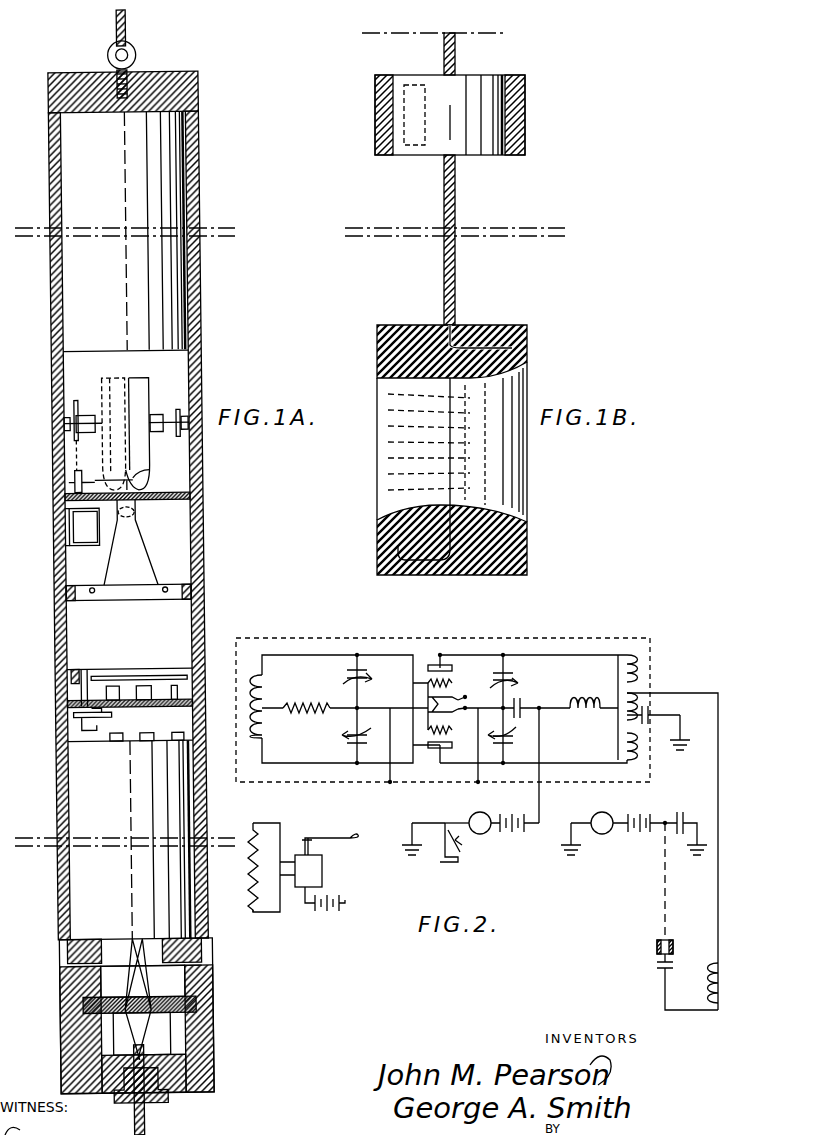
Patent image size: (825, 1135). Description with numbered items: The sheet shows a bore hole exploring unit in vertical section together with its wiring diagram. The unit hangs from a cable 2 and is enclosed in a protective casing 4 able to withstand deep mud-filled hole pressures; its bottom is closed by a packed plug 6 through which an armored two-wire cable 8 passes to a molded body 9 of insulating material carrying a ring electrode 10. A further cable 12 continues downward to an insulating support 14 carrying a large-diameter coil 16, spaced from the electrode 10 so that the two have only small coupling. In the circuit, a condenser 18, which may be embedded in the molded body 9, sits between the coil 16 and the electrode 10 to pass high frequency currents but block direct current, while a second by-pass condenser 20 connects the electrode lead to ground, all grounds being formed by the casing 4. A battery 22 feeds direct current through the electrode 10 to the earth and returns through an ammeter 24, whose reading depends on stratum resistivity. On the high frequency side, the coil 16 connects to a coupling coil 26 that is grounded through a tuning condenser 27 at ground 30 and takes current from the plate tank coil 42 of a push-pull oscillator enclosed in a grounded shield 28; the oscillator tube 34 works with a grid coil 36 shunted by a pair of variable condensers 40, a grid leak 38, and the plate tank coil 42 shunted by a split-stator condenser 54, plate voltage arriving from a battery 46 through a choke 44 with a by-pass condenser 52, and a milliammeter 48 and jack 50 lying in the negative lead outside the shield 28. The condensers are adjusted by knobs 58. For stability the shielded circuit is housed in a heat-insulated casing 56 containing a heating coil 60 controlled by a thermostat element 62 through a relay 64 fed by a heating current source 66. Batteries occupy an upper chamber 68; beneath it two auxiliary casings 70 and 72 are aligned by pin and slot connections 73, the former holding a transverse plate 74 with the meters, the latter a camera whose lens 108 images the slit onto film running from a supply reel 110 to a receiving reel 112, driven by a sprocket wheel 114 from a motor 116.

In FIG. 1A, the cable 2 is at (133, 28).
In FIG. 2, the cable 2 is at (430, 840).
In FIG. 1A, the protective casing 4 is at (204, 188).
In FIG. 1A, the plug 6 is at (208, 1003).
In FIG. 1A, the armored two-wire cable 8 is at (138, 1120).
In FIG. 1B, the armored two-wire cable 8 is at (455, 52).
In FIG. 1B, the molded body of insulating material 9 is at (474, 95).
In FIG. 1B, the electrode 10 is at (525, 115).
In FIG. 2, the electrode 10 is at (668, 940).
In FIG. 1B, the cable 12 is at (455, 285).
In FIG. 1B, the insulating support 14 is at (527, 343).
In FIG. 1B, the coil 16 is at (498, 420).
In FIG. 2, the coil 16 is at (712, 970).
In FIG. 1B, the condenser 18 is at (412, 85).
In FIG. 2, the condenser 18 is at (660, 966).
In FIG. 2, the by-pass condenser 20 is at (683, 815).
In FIG. 2, the battery 22 is at (642, 812).
In FIG. 2, the ammeter 24 is at (606, 834).
In FIG. 2, the coupling coil 26 is at (633, 700).
In FIG. 2, the tuning condenser 27 is at (650, 712).
In FIG. 2, the grounded shield 28 is at (600, 638).
In FIG. 2, the ground 30 is at (684, 740).
In FIG. 2, the vacuum tube 34 is at (458, 679).
In FIG. 2, the grid coil 36 is at (264, 684).
In FIG. 2, the grid leak 38 is at (305, 713).
In FIG. 2, the variable condensers 40 is at (370, 706).
In FIG. 2, the plate tank coil 42 is at (633, 662).
In FIG. 2, the choke 44 is at (578, 698).
In FIG. 2, the battery 46 is at (512, 832).
In FIG. 2, the milliammeter 48 is at (480, 812).
In FIG. 2, the jack 50 is at (452, 862).
In FIG. 2, the by-pass condenser 52 is at (520, 698).
In FIG. 2, the split-stator condenser 54 is at (494, 708).
In FIG. 1A, the heat-insulated outer casing 56 is at (75, 780).
In FIG. 1A, the adjusting knobs 58 is at (158, 724).
In FIG. 2, the heating coil 60 is at (253, 880).
In FIG. 2, the thermostat element 62 is at (352, 834).
In FIG. 2, the relay 64 is at (322, 872).
In FIG. 2, the source of heating current 66 is at (330, 913).
In FIG. 1A, the chamber 68 is at (165, 293).
In FIG. 1A, the auxiliary casing 70 is at (204, 605).
In FIG. 1A, the auxiliary casing 72 is at (204, 505).
In FIG. 1A, the pin and slot connections 73 is at (94, 593).
In FIG. 1A, the transverse plate 74 is at (108, 670).
In FIG. 1A, the lens 108 is at (134, 514).
In FIG. 1A, the supply reel 110 is at (145, 378).
In FIG. 1A, the receiving reel 112 is at (112, 390).
In FIG. 1A, the sprocket wheel 114 is at (134, 476).
In FIG. 1A, the motor 116 is at (82, 530).